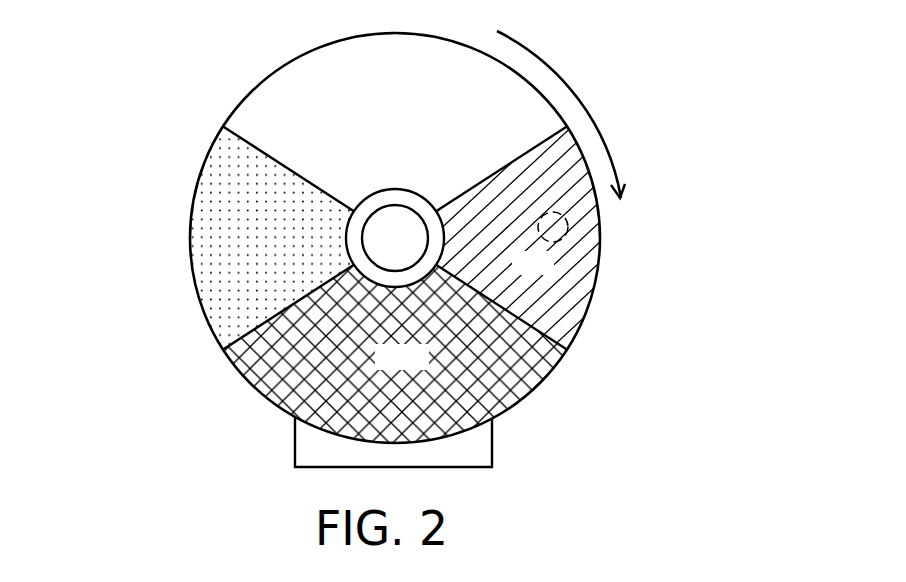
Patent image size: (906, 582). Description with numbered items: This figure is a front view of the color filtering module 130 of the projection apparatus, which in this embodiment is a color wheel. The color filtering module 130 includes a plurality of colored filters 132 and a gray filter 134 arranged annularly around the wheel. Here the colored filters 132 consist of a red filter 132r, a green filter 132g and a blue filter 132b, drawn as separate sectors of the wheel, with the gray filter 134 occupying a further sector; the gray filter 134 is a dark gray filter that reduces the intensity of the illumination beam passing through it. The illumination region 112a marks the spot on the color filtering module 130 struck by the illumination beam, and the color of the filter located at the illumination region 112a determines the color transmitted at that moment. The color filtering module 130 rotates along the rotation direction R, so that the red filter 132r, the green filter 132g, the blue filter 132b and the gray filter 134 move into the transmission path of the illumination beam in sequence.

The color filtering module 130 is at (456, 259).
The colored filters 132 is at (456, 204).
The green filter 132g is at (280, 102).
The blue filter 132b is at (217, 278).
The red filter 132r is at (571, 297).
The gray filter 134 is at (266, 378).
The illumination region 112a is at (567, 220).
The rotation direction R is at (602, 133).